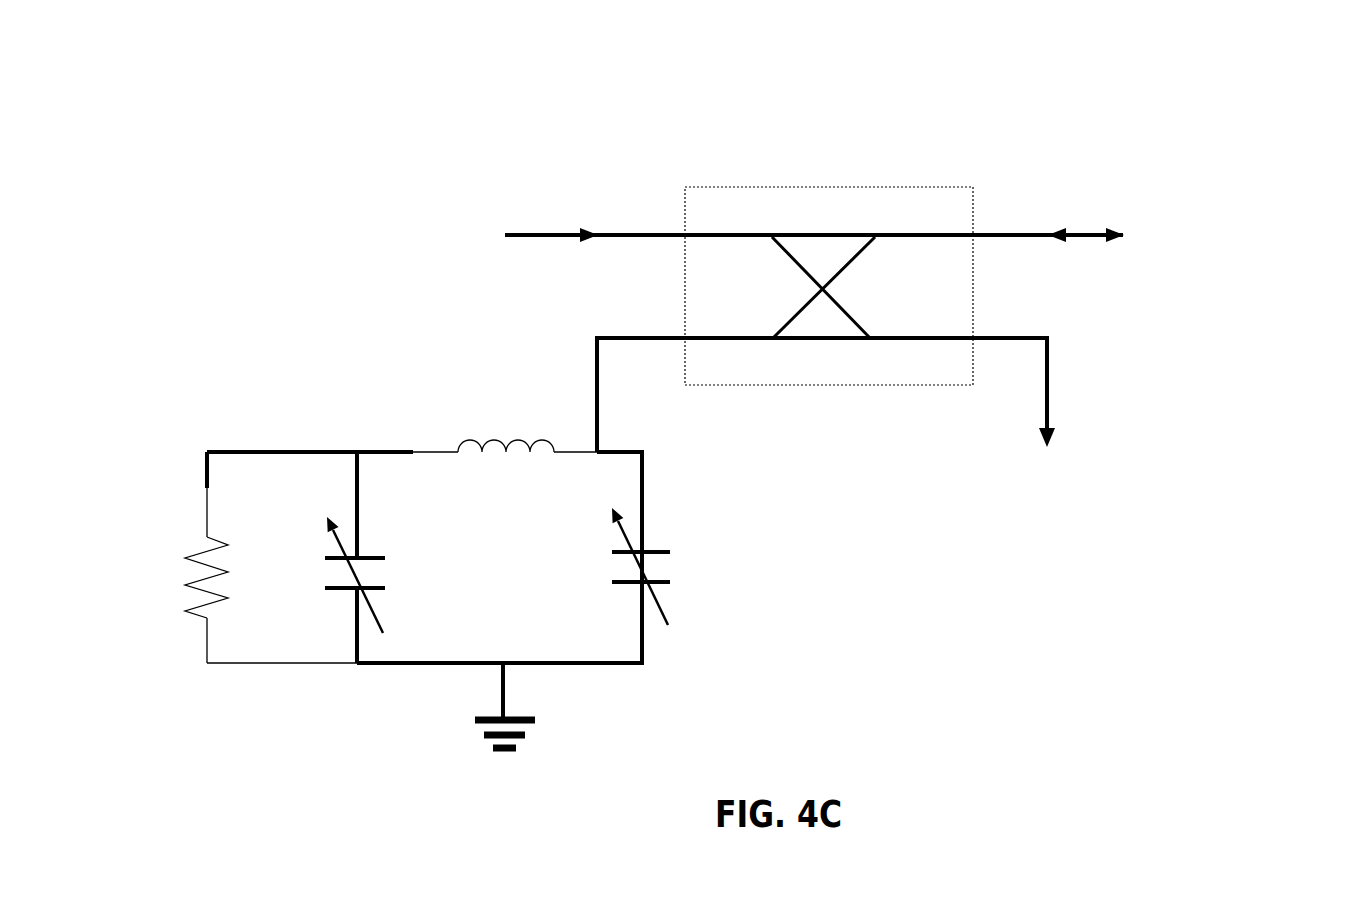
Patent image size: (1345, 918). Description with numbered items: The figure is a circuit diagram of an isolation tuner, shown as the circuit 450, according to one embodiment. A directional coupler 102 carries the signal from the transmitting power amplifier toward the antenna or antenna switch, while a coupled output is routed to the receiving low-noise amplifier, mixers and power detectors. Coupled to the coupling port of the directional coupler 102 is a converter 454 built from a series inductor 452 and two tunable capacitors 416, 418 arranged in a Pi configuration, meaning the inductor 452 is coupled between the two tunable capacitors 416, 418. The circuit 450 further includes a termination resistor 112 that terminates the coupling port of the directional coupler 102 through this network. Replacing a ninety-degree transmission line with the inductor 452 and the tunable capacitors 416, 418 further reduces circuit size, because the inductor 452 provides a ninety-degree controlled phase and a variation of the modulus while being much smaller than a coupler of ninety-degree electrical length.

The circuit 450 is at (185, 115).
The directional coupler 102 is at (750, 165).
The converter 454 is at (212, 366).
The series inductor 452 is at (507, 413).
The tunable capacitor 416 is at (330, 613).
The tunable capacitor 418 is at (628, 613).
The termination resistor 112 is at (157, 581).